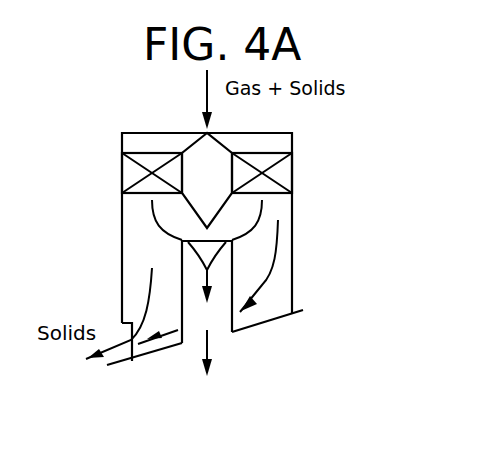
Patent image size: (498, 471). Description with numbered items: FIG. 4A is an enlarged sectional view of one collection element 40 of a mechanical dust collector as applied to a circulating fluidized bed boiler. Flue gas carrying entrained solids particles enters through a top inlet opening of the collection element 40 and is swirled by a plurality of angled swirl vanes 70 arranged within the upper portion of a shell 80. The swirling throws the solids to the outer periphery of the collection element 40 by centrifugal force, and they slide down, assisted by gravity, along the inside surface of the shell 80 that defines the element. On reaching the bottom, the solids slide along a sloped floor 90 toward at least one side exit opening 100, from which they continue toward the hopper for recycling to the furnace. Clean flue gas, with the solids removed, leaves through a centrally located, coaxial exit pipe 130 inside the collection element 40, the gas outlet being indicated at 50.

The collection element 40 is at (148, 240).
The swirl vanes 70 is at (282, 170).
The shell 80 is at (292, 233).
The exit pipe 130 is at (233, 270).
The sloped floor 90 is at (273, 328).
The gas outlet 50 is at (222, 333).
The side exit opening 100 is at (128, 355).